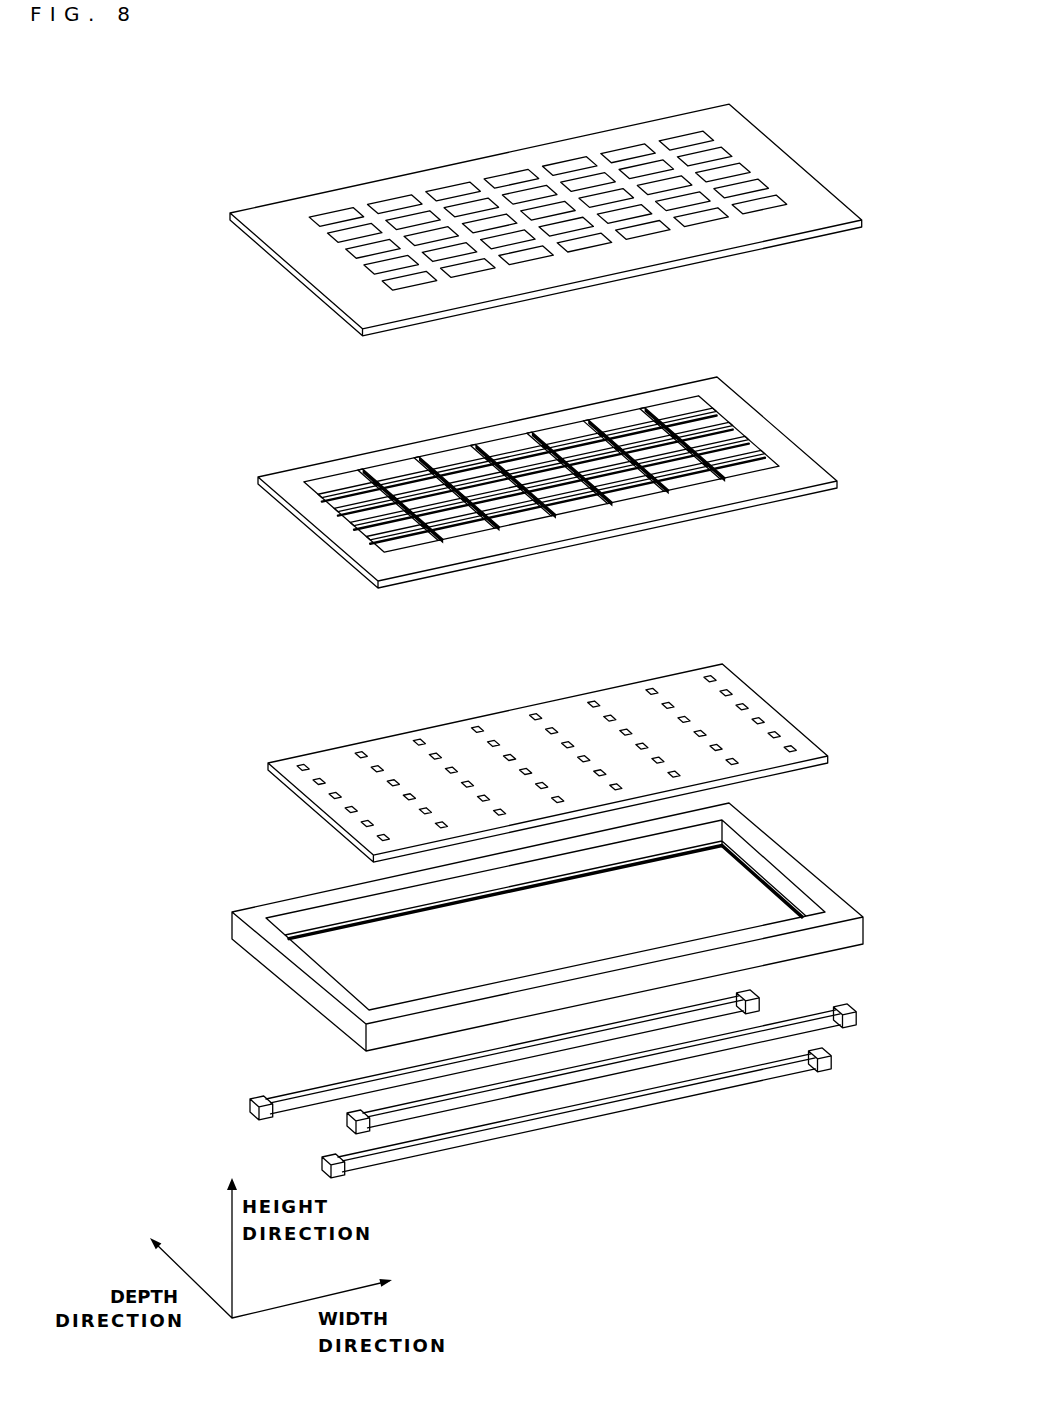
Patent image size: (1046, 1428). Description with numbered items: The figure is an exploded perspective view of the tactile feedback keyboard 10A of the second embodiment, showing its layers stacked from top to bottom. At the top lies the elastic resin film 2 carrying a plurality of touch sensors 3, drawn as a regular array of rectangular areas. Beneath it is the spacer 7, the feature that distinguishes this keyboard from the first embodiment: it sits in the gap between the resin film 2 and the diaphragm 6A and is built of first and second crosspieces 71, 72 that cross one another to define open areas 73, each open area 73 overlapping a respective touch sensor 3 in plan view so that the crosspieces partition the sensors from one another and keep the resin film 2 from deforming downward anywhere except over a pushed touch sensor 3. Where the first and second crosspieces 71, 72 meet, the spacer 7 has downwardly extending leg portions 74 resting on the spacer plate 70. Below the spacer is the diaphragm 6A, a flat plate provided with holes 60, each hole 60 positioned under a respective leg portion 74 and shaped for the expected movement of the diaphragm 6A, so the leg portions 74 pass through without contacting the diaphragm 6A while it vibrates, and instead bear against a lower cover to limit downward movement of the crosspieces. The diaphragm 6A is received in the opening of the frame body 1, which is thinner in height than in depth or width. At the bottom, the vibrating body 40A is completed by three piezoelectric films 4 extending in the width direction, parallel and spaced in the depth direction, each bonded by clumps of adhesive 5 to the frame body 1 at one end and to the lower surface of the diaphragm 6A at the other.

The tactile feedback keyboard 10A is at (215, 112).
The resin film 2 is at (845, 212).
The touch sensors 3 is at (766, 203).
The spacer 7 is at (822, 379).
The frame plate 70 is at (818, 478).
The first crosspieces 71 is at (760, 450).
The second crosspieces 72 is at (538, 443).
The open areas 73 is at (670, 455).
The leg portions 74 is at (496, 518).
The diaphragm 6A is at (806, 752).
The holes 60 is at (435, 756).
The frame body 1 is at (855, 903).
The vibrating body 40A is at (676, 1187).
The piezoelectric films 4 is at (757, 1102).
The adhesive 5 is at (827, 1057).